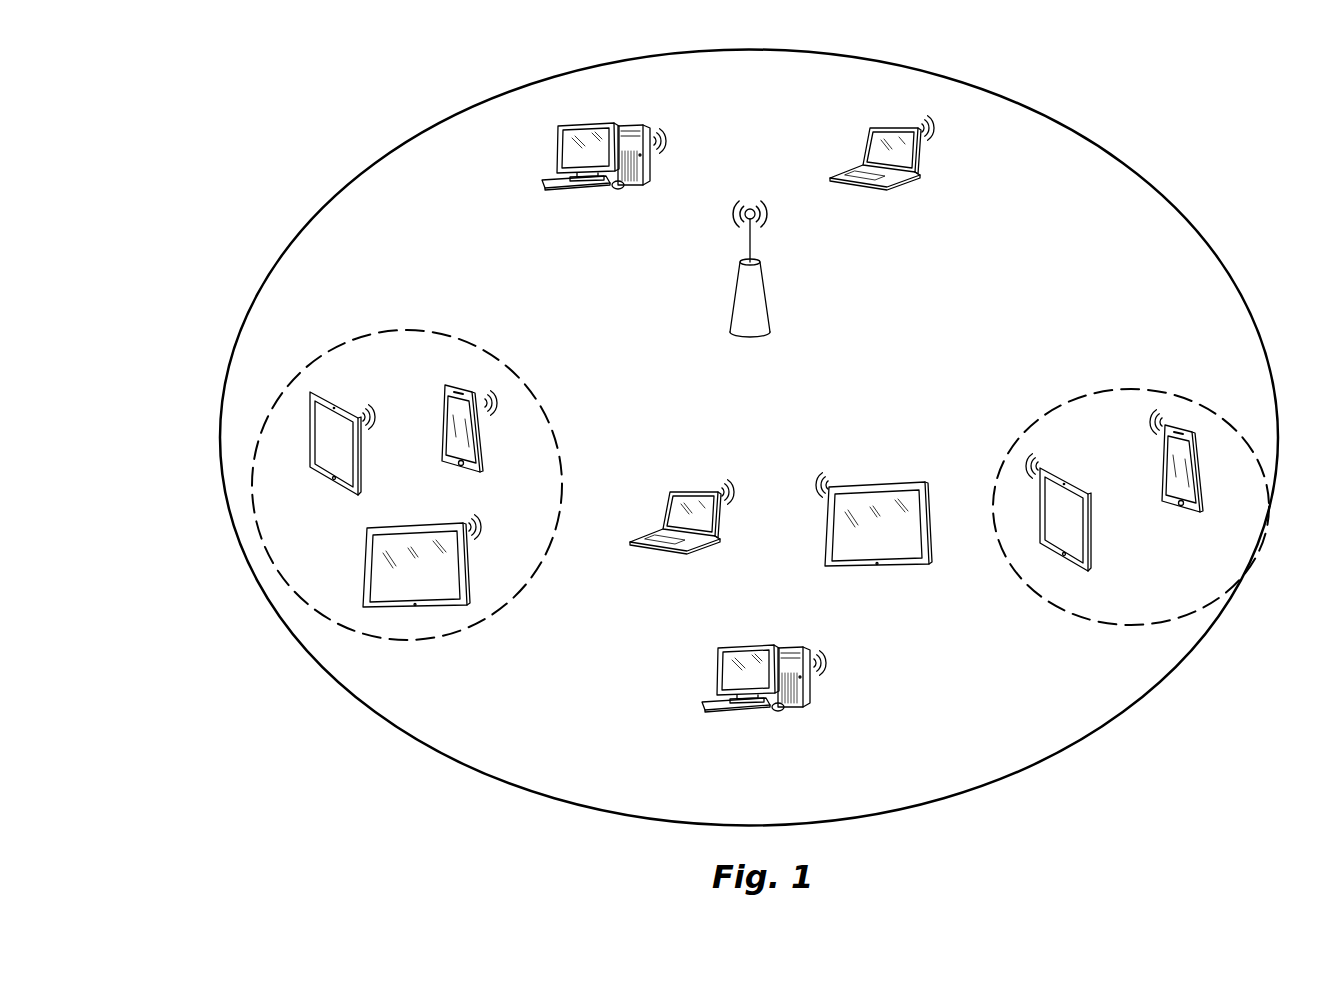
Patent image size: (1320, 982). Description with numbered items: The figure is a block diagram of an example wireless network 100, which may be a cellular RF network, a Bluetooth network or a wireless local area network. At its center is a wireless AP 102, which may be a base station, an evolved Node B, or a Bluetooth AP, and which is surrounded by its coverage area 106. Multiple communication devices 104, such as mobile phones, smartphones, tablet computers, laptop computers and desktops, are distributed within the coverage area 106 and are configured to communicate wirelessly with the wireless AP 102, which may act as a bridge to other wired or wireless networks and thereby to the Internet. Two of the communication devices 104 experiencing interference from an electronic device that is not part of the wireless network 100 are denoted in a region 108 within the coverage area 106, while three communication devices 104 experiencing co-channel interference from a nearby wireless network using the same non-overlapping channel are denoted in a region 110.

The wireless network 100 is at (278, 104).
The wireless access point 102 is at (768, 297).
The communication devices 104 is at (865, 146).
The coverage area 106 is at (1128, 160).
The region 108 is at (1108, 390).
The region 110 is at (497, 357).